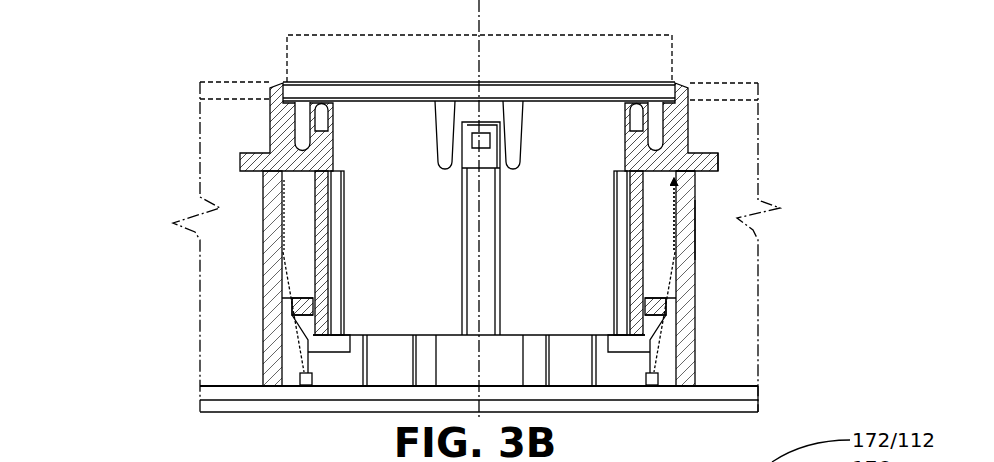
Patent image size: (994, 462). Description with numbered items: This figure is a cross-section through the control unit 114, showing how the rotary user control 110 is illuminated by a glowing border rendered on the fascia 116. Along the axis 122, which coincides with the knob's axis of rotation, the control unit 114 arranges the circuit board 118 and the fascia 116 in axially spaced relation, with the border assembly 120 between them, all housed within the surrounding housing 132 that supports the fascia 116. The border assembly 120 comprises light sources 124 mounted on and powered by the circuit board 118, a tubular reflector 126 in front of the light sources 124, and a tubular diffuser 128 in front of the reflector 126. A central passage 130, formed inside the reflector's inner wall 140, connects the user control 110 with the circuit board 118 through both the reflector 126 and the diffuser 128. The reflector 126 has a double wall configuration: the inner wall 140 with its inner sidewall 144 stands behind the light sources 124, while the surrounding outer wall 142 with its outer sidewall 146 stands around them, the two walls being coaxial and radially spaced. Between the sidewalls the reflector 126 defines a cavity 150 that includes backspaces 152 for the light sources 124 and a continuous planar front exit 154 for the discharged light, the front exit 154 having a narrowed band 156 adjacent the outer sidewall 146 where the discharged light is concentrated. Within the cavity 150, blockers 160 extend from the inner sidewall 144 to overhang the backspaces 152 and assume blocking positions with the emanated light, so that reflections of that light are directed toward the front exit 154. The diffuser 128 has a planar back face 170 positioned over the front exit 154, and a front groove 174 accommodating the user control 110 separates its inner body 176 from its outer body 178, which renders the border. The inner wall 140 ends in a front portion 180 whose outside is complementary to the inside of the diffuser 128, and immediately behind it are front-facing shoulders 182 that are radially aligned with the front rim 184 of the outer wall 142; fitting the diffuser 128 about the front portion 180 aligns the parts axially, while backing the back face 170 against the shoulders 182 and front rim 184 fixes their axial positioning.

The user control 110 is at (287, 48).
The fascia 116 is at (200, 91).
The tubular diffuser 128 is at (267, 137).
The control unit 114 is at (196, 155).
The border assembly 120 is at (261, 267).
The tubular reflector 126 is at (263, 338).
The light sources 124 is at (298, 376).
The circuit board 118 is at (200, 386).
The housing 132 is at (200, 410).
The axis 122 is at (476, 32).
The passage 130 is at (420, 136).
The front portion 180 is at (618, 126).
The front-facing shoulders 182 is at (633, 158).
The front exit 154 is at (647, 183).
The narrowed band 156 is at (664, 183).
The cavity 150 is at (652, 272).
The inner body 176 is at (664, 124).
The front groove 174 is at (688, 86).
The outer body 178 is at (645, 134).
The front rim 184 is at (694, 160).
The back face 170 is at (700, 172).
The outer wall 142 is at (697, 200).
The inner wall 140 is at (698, 236).
The inner sidewall 144 is at (742, 221).
The outer sidewall 146 is at (668, 256).
The blockers 160 is at (668, 361).
The backspaces 152 is at (657, 334).